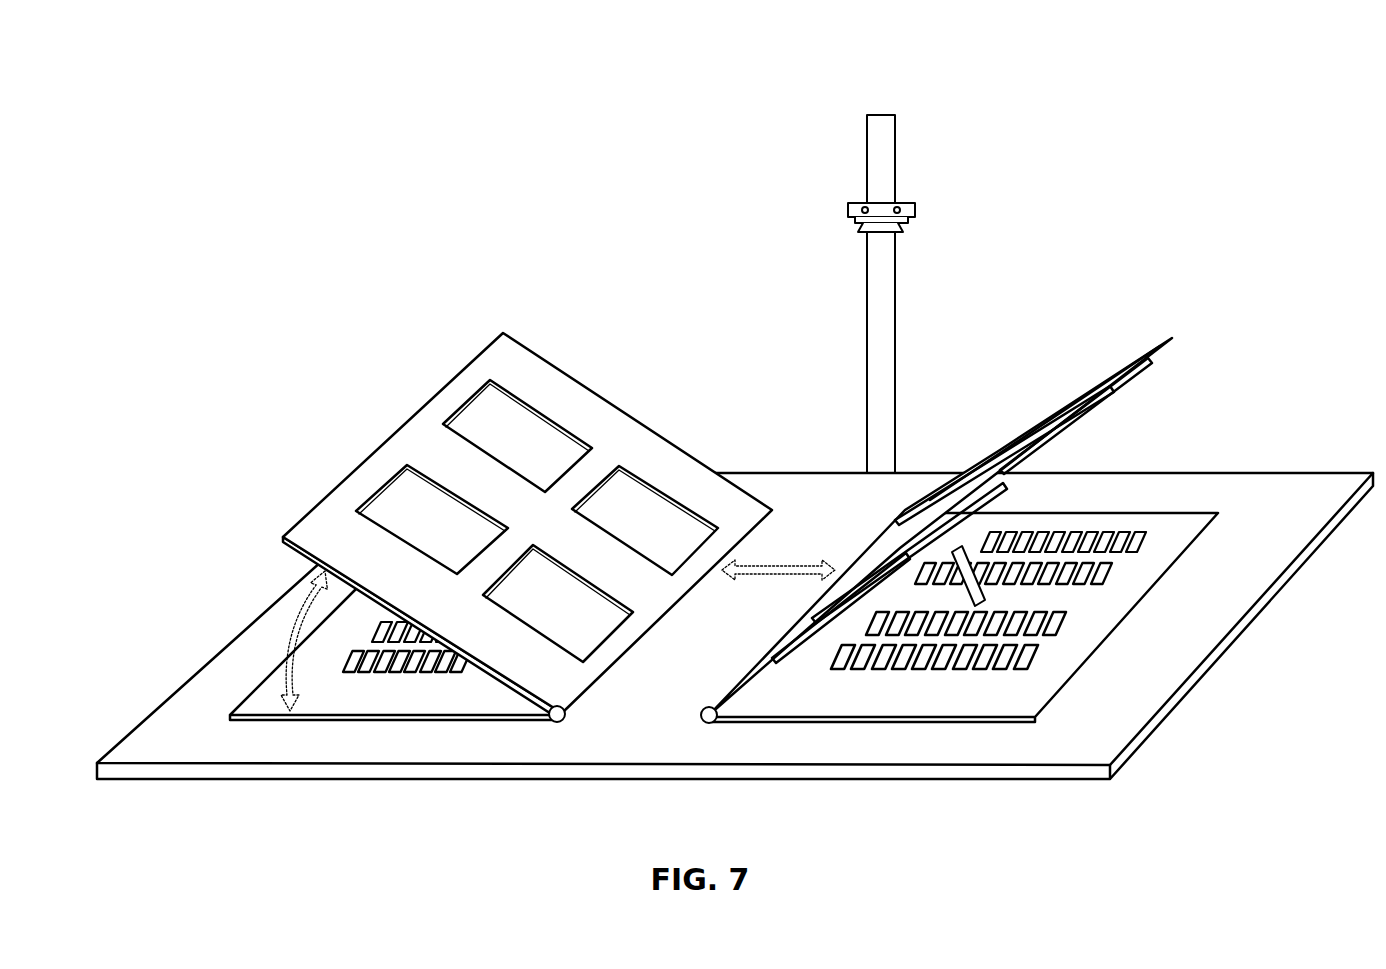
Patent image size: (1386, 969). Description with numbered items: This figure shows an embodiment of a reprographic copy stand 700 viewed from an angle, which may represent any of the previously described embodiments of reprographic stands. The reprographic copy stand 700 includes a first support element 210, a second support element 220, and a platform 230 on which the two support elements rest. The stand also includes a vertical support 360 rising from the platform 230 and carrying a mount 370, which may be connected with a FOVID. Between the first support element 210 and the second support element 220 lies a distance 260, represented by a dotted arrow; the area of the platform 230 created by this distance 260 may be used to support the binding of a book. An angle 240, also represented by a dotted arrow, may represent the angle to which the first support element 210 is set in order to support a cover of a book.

The reprographic copy stand 700 is at (228, 127).
The first support element 210 is at (503, 333).
The second support element 220 is at (1118, 372).
The platform 230 is at (185, 683).
The angle 240 is at (292, 610).
The distance 260 is at (820, 566).
The vertical support 360 is at (883, 115).
The mount 370 is at (848, 203).